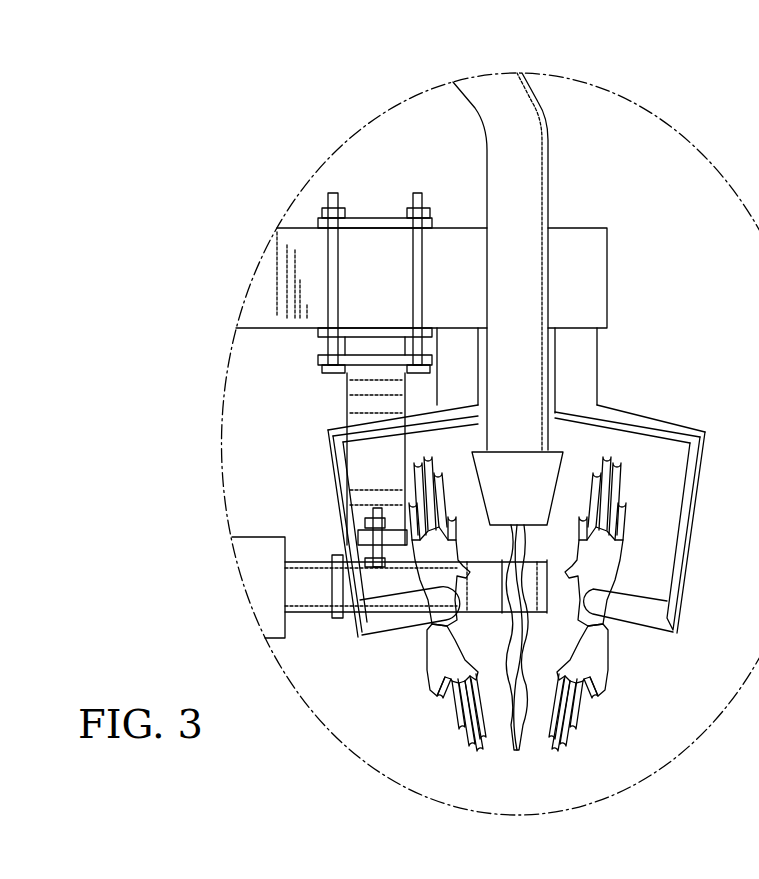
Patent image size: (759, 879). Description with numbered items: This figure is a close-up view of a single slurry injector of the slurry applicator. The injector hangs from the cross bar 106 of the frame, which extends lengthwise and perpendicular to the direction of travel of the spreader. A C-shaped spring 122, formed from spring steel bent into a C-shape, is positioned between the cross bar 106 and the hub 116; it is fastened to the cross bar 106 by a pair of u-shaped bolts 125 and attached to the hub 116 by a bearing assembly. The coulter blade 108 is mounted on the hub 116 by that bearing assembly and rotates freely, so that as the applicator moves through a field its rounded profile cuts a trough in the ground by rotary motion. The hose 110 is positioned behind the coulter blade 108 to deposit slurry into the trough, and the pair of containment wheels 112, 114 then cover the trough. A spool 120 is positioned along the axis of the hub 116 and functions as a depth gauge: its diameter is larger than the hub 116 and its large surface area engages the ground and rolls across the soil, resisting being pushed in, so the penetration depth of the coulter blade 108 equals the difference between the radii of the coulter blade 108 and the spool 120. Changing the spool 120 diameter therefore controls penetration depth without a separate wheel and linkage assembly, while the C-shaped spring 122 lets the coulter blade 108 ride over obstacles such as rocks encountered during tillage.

The cross bar 106 is at (267, 300).
The coulter blade 108 is at (522, 728).
The hose 110 is at (548, 202).
The containment wheel 112 is at (583, 663).
The containment wheel 114 is at (448, 668).
The hub 116 is at (317, 557).
The spool 120 is at (247, 535).
The C-shaped spring 122 is at (355, 407).
The u-shaped bolts 125 is at (413, 192).